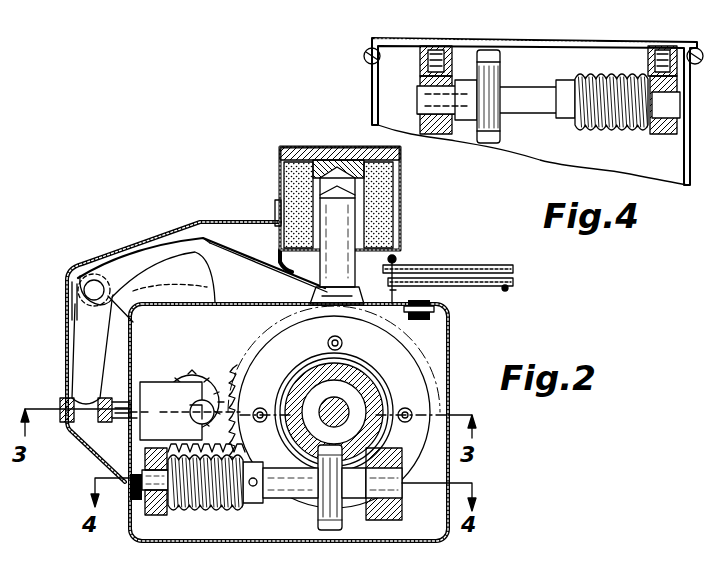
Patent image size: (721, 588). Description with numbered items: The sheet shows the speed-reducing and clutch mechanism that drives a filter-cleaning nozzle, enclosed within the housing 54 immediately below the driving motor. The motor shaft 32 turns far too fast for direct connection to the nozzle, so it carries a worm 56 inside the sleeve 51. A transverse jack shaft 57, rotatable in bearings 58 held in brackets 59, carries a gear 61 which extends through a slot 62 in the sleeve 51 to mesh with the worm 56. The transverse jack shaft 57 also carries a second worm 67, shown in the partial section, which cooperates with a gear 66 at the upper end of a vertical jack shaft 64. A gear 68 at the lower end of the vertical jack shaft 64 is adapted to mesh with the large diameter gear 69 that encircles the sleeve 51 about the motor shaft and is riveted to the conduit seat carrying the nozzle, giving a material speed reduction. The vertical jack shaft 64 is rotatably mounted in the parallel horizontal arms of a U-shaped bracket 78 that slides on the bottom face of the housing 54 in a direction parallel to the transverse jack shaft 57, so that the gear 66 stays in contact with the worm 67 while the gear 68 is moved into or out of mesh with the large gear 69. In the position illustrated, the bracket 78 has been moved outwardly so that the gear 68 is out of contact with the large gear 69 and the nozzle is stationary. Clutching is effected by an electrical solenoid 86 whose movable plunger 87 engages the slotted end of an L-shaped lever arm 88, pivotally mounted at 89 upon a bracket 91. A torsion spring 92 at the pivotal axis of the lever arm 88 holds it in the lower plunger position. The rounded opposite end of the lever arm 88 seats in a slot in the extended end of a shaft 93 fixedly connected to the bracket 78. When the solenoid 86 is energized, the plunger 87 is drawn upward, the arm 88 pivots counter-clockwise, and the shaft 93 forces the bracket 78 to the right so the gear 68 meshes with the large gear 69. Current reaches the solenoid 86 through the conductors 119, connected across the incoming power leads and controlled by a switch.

In FIG. 2, the motor shaft 32 is at (340, 404).
In FIG. 2, the sleeve 51 is at (372, 392).
In FIG. 4, the housing 54 is at (568, 38).
In FIG. 2, the housing 54 is at (202, 545).
In FIG. 2, the worm 56 is at (318, 380).
In FIG. 4, the transverse jack shaft 57 is at (517, 94).
In FIG. 2, the transverse jack shaft 57 is at (300, 502).
In FIG. 4, the bearings 58 is at (420, 118).
In FIG. 2, the bearings 58 is at (170, 514).
In FIG. 4, the brackets 59 is at (420, 60).
In FIG. 2, the brackets 59 is at (170, 512).
In FIG. 4, the gear 61 is at (500, 128).
In FIG. 2, the gear 61 is at (318, 522).
In FIG. 2, the slot 62 is at (290, 448).
In FIG. 2, the vertical jack shaft 64 is at (190, 422).
In FIG. 2, the gear 66 is at (190, 374).
In FIG. 4, the worm 67 is at (610, 132).
In FIG. 2, the worm 67 is at (210, 512).
In FIG. 2, the gear 68 is at (232, 392).
In FIG. 2, the large diameter gear 69 is at (330, 379).
In FIG. 2, the U-shaped bracket 78 is at (185, 411).
In FIG. 2, the electrical solenoid 86 is at (400, 190).
In FIG. 2, the movable plunger 87 is at (337, 235).
In FIG. 2, the L-shaped lever arm 88 is at (202, 270).
In FIG. 2, the pivot 89 is at (89, 283).
In FIG. 2, the bracket 91 is at (180, 305).
In FIG. 2, the torsion spring 92 is at (137, 318).
In FIG. 2, the shaft 93 is at (106, 422).
In FIG. 2, the conductors 119 is at (496, 280).